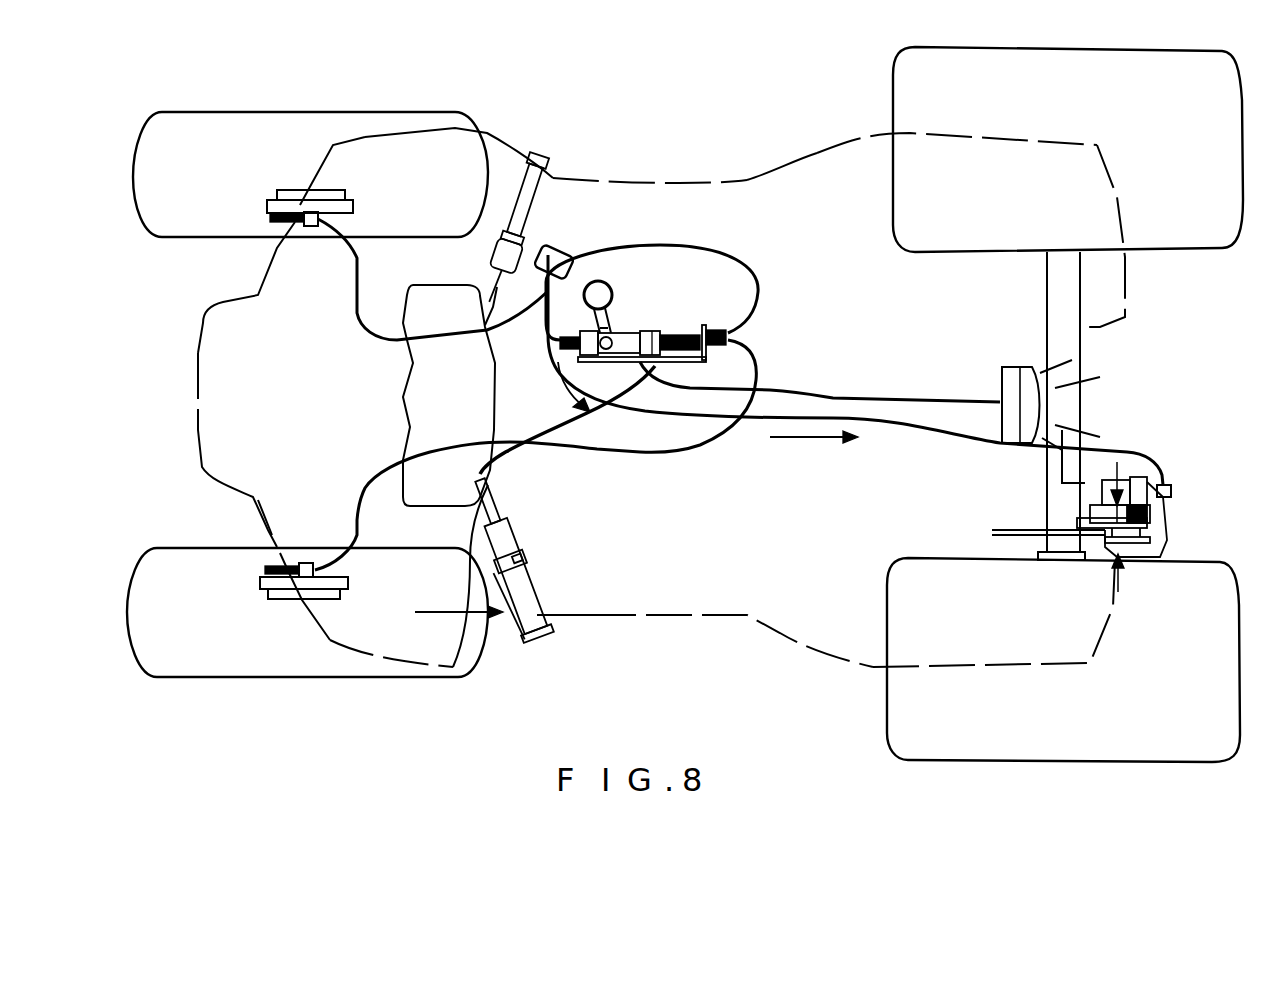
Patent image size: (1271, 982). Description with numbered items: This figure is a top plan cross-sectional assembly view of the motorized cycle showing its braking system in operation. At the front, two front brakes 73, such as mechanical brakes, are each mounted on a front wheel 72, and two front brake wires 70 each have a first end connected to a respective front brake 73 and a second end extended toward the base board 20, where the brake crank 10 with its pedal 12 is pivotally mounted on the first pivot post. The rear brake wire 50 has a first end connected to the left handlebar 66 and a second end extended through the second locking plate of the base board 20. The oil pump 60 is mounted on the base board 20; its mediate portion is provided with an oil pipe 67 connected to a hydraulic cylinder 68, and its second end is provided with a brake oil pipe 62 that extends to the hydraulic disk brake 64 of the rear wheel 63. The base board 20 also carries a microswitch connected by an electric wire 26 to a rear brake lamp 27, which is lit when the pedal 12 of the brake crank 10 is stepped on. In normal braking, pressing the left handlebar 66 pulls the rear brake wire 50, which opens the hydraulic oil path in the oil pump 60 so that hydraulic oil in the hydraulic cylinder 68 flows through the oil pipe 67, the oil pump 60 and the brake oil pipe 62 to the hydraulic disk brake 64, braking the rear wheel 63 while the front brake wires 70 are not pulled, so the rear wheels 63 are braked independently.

The brake crank 10 is at (543, 316).
The pedal 12 is at (547, 248).
The base board 20 is at (623, 363).
The electric wire 26 is at (890, 397).
The rear brake lamp 27 is at (1017, 378).
The rear brake wire 50 is at (503, 460).
The oil pump 60 is at (620, 333).
The brake oil pipe 62 is at (1147, 482).
The rear wheel 63 is at (898, 76).
The hydraulic disk brake 64 is at (1163, 533).
The left handlebar 66 is at (486, 612).
The oil pipe 67 is at (617, 330).
The hydraulic cylinder 68 is at (596, 283).
The front brake wires 70 is at (738, 268).
The front wheel 72 is at (217, 128).
The front brakes 73 is at (302, 193).